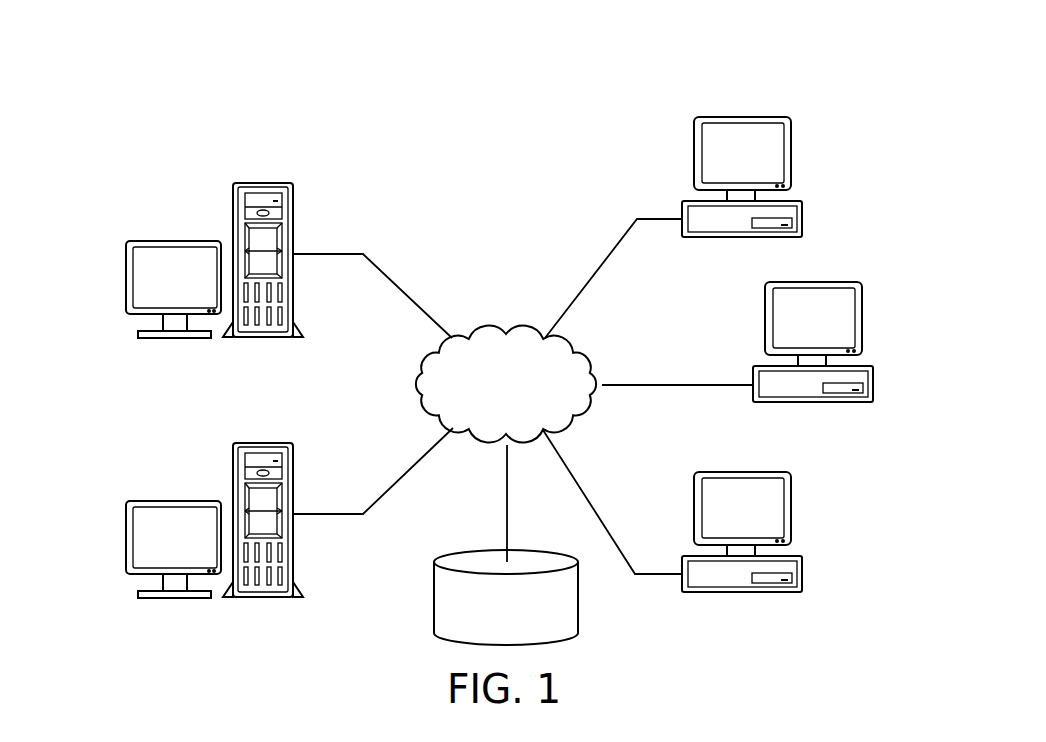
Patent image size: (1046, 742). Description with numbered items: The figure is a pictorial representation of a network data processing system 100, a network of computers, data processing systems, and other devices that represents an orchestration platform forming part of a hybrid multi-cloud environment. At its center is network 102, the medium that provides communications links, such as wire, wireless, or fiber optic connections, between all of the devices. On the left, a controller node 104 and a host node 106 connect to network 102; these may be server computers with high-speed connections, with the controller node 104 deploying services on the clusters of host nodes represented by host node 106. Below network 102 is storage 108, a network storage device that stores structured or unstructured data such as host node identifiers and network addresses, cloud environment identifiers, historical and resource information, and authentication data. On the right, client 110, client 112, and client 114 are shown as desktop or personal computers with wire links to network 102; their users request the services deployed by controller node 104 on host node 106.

The network data processing system 100 is at (366, 161).
The network 102 is at (478, 335).
The controller node 104 is at (126, 278).
The host node 106 is at (126, 538).
The storage 108 is at (434, 597).
The client 110 is at (802, 210).
The client 112 is at (873, 393).
The client 114 is at (802, 582).